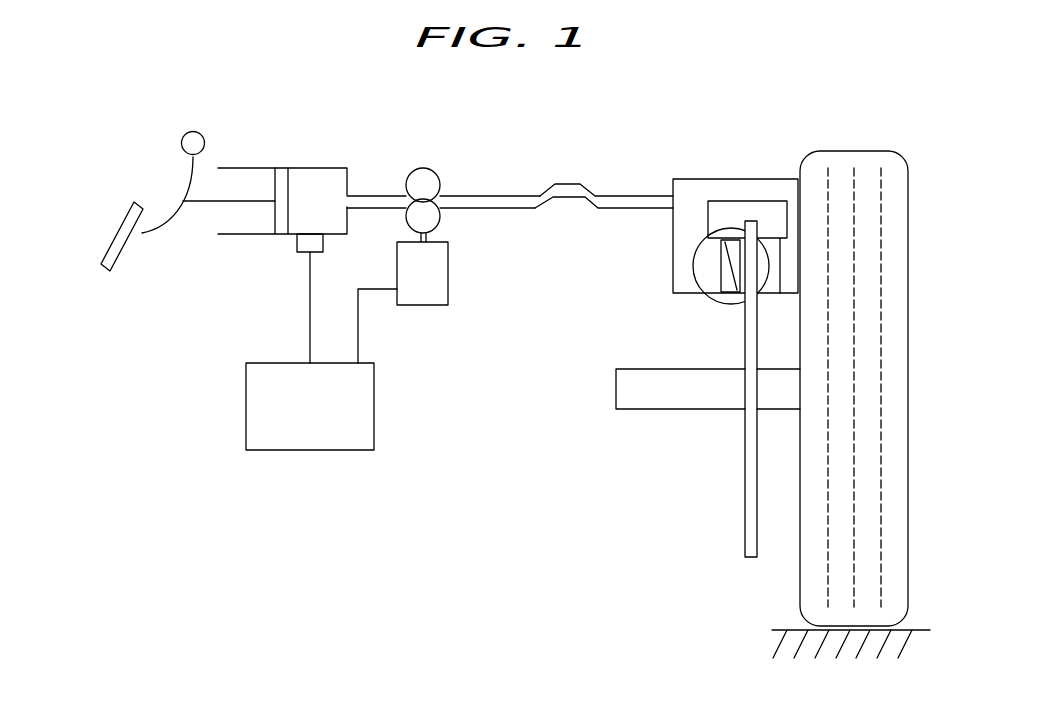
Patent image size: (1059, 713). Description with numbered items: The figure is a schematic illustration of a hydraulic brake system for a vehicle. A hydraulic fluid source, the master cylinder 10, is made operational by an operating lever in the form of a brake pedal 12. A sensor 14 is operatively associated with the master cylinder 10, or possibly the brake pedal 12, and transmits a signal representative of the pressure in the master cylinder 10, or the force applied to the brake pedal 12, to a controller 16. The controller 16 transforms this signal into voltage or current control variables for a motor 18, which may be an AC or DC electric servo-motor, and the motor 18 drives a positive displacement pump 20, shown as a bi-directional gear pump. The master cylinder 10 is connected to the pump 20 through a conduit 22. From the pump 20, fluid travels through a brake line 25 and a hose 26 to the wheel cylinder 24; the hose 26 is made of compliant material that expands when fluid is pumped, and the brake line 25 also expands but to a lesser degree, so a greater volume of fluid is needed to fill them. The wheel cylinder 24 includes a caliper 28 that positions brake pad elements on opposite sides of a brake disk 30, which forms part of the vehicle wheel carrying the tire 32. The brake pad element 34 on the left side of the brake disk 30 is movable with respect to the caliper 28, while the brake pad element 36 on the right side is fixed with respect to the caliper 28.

The master cylinder 10 is at (300, 169).
The brake pedal 12 is at (130, 237).
The sensor 14 is at (297, 244).
The controller 16 is at (375, 407).
The motor 18 is at (448, 275).
The positive displacement pump 20 is at (435, 168).
The conduit 22 is at (368, 195).
The wheel cylinder 24 is at (776, 210).
The brake line 25 is at (475, 196).
The hose 26 is at (558, 184).
The caliper 28 is at (747, 179).
The brake disk 30 is at (743, 525).
The tire 32 is at (843, 151).
The brake pad element 34 is at (740, 262).
The brake pad element 36 is at (772, 247).